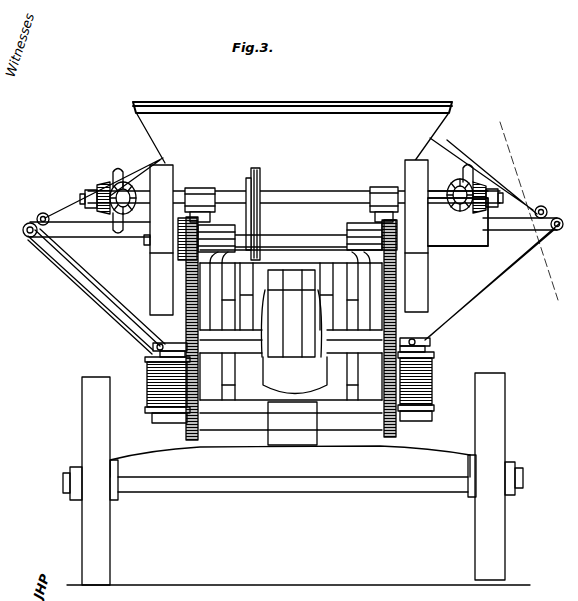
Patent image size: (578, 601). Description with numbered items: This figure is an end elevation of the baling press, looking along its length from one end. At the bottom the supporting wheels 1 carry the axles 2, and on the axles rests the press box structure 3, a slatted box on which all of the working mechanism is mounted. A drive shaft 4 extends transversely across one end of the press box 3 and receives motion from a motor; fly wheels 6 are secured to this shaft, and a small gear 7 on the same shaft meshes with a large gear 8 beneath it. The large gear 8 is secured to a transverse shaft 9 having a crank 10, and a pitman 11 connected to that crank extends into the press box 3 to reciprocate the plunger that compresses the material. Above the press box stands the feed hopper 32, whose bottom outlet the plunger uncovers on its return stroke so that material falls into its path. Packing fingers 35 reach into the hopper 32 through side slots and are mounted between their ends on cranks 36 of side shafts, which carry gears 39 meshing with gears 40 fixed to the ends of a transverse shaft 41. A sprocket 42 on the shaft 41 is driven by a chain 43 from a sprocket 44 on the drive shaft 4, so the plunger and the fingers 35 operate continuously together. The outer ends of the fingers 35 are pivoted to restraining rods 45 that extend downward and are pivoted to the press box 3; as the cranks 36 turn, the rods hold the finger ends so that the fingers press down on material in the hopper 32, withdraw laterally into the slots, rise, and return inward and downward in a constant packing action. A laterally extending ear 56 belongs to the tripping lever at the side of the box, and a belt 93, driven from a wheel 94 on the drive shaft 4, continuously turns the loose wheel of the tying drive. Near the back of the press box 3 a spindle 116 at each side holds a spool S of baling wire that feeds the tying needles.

The supporting wheels 1 is at (84, 431).
The axles 2 is at (524, 480).
The press box structure 3 is at (360, 405).
The drive shaft 4 is at (303, 240).
The fly wheels 6 is at (160, 252).
The small gear 7 is at (187, 240).
The large gear 8 is at (186, 322).
The transverse shaft 9 is at (158, 348).
The crank 10 is at (308, 355).
The pitman 11 is at (291, 292).
The feed hopper 32 is at (376, 128).
The packing fingers 35 is at (80, 232).
The cranks 36 is at (157, 198).
The gears 39 is at (120, 222).
The gears 40 is at (116, 182).
The transverse shaft 41 is at (306, 196).
The sprocket 42 is at (260, 198).
The chain 43 is at (249, 188).
The sprocket 44 is at (262, 240).
The restraining rods 45 is at (90, 266).
The laterally extending ear 56 is at (438, 255).
The belt 93 is at (143, 257).
The wheel 94 is at (157, 270).
The spindle 116 is at (162, 362).
The spool S is at (152, 385).